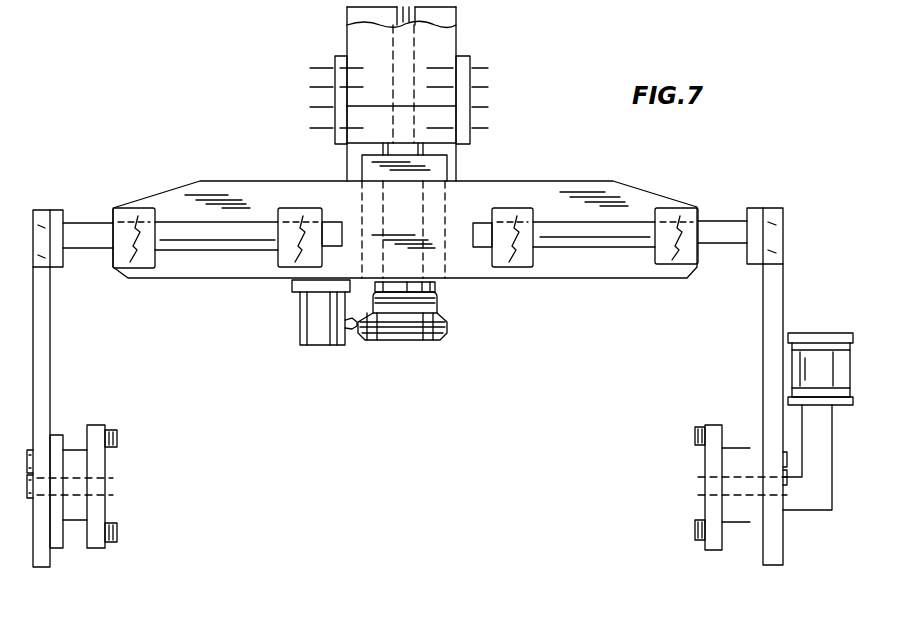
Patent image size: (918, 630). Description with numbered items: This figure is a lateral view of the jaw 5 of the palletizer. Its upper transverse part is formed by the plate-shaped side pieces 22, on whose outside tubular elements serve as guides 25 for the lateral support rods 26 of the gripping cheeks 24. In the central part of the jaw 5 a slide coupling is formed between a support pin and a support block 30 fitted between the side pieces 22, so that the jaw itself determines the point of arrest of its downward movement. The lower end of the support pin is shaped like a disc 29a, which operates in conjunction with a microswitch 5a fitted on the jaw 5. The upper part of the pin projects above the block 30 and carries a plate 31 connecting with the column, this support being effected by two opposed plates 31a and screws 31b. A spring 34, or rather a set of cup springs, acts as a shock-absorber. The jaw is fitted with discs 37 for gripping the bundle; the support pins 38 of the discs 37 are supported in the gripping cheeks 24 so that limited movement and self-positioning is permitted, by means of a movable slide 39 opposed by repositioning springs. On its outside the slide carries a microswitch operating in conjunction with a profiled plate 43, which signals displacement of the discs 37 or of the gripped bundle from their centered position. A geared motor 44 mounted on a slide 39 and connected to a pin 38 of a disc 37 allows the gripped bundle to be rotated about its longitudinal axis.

The jaw 5 is at (418, 211).
The microswitch 5a is at (356, 330).
The side pieces 22 is at (638, 200).
The gripping cheeks 24 is at (40, 217).
The guides 25 is at (138, 213).
The lateral support rods 26 is at (88, 232).
The disc 29a is at (425, 338).
The support block 30 is at (363, 172).
The plate 31 is at (438, 118).
The opposed plates 31a is at (333, 118).
The screws 31b is at (335, 109).
The spring 34 is at (437, 285).
The discs 37 is at (100, 513).
The support pins 38 is at (78, 488).
The movable slide 39 is at (37, 478).
The profiled plate 43 is at (30, 453).
The geared motor 44 is at (837, 333).